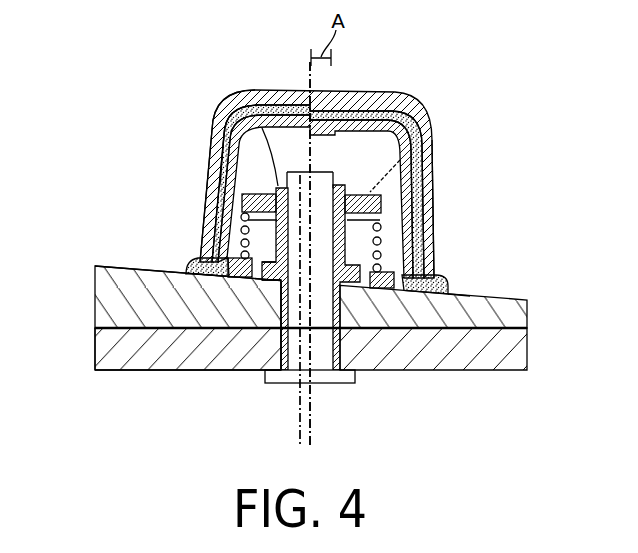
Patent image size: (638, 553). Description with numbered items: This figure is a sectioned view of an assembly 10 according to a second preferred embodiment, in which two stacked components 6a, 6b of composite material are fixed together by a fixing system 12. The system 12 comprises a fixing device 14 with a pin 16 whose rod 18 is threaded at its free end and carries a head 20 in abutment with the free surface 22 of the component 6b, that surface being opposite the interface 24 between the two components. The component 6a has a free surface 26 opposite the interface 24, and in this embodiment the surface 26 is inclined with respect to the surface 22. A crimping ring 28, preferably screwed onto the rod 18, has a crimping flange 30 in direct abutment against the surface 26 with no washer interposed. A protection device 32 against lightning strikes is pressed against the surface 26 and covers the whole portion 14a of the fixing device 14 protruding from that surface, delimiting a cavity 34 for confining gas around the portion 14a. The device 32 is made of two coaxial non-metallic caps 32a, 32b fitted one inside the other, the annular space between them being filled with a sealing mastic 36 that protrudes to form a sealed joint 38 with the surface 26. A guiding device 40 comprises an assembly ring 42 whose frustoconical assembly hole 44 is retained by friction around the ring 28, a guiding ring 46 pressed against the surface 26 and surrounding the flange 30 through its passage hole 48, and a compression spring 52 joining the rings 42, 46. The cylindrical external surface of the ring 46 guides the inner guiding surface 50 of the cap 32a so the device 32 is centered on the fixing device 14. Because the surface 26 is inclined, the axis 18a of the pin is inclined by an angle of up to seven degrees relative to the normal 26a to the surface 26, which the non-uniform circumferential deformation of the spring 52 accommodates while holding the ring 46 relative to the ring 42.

The assembly 10 is at (466, 172).
The fixing system 12 is at (207, 82).
The fixing device 14 is at (415, 124).
The portion of the fixing device 14a is at (430, 208).
The pin 16 is at (298, 357).
The rod 18 is at (440, 274).
The axis of the pin 18a is at (310, 440).
The head 20 is at (340, 381).
The free surface 22 is at (118, 372).
The interface 24 is at (96, 337).
The free surface 26 is at (95, 264).
The normal 26a is at (300, 440).
The crimping ring 28 is at (262, 108).
The crimping flange 30 is at (283, 287).
The protection device 32 is at (365, 86).
The inner cap 32a is at (214, 153).
The outer cap 32b is at (205, 222).
The cavity 34 is at (264, 120).
The sealing mastic 36 is at (218, 108).
The sealed joint 38 is at (186, 268).
The guiding device 40 is at (242, 100).
The assembly ring 42 is at (212, 185).
The assembly hole 44 is at (428, 150).
The guiding ring 46 is at (463, 291).
The passage hole 48 is at (265, 284).
The inner guiding surface 50 is at (240, 283).
The compression spring 52 is at (352, 242).
The component 6a is at (512, 309).
The component 6b is at (515, 358).